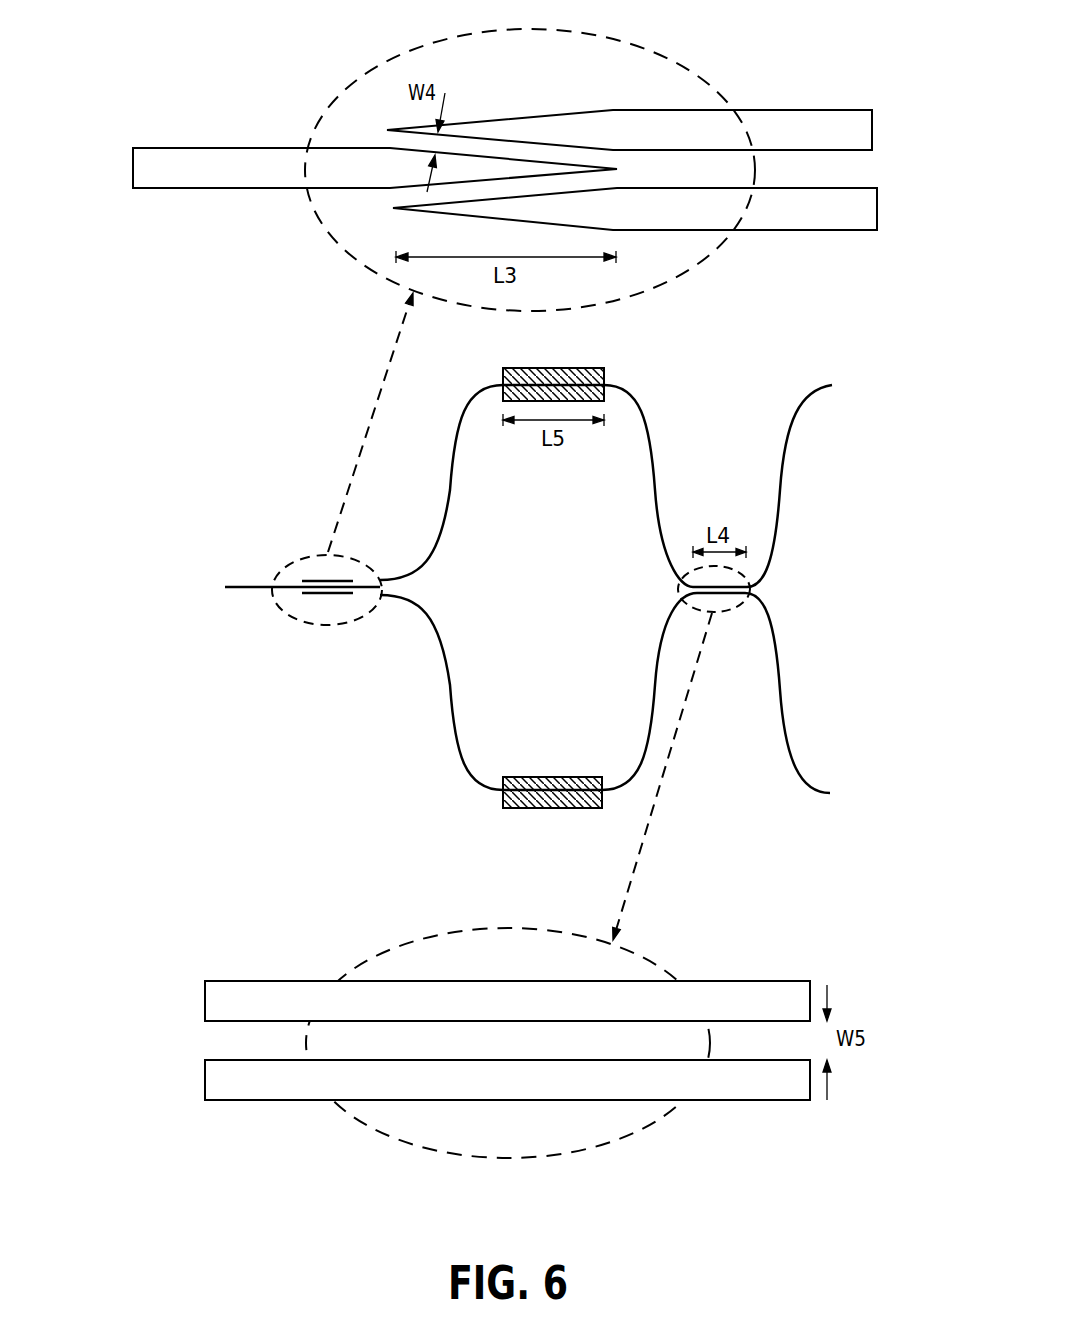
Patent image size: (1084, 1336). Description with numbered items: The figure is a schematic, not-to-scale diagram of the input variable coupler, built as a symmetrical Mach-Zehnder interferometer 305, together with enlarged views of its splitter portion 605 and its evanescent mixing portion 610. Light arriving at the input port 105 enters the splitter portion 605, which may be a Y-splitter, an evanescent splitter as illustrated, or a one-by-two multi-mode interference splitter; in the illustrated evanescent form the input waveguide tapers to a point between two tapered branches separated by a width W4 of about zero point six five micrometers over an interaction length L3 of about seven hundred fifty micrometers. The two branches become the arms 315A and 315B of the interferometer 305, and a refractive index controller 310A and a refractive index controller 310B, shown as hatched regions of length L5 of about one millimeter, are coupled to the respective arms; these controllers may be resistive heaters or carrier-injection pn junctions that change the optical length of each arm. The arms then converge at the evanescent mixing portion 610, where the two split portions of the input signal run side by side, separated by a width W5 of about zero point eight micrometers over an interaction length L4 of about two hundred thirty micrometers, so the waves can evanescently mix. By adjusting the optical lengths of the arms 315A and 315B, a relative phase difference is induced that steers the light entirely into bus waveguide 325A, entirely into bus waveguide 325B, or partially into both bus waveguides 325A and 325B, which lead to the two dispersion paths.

The input port 105 is at (170, 148).
The symmetrical Mach-Zehnder interferometer 305 is at (376, 788).
The refractive index controller 310A is at (586, 368).
The refractive index controller 310B is at (545, 808).
The arm 315A is at (805, 111).
The arm 315B is at (798, 231).
The bus waveguide 325A is at (808, 398).
The bus waveguide 325B is at (800, 765).
The splitter portion 605 is at (645, 50).
The evanescent mixing portion 610 is at (750, 590).